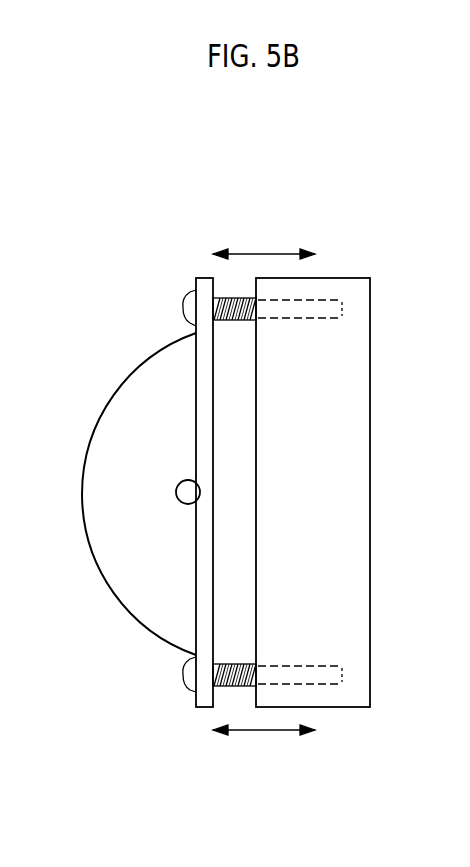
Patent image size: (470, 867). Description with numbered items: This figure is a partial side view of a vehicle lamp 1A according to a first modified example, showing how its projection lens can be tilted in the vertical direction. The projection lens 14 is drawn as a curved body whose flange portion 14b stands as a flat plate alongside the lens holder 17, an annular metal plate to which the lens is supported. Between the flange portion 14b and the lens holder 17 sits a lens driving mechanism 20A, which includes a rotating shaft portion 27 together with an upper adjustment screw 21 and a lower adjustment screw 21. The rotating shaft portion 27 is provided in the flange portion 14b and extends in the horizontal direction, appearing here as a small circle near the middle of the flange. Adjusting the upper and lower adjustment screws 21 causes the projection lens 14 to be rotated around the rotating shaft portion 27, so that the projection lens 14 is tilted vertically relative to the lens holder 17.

The vehicle lamp 1A is at (350, 251).
The projection lens 14 is at (157, 355).
The flange portion 14b is at (201, 277).
The lens holder 17 is at (370, 340).
The lens driving mechanism 20A is at (158, 706).
The adjustment screw 21 is at (181, 306).
The rotating shaft portion 27 is at (177, 495).